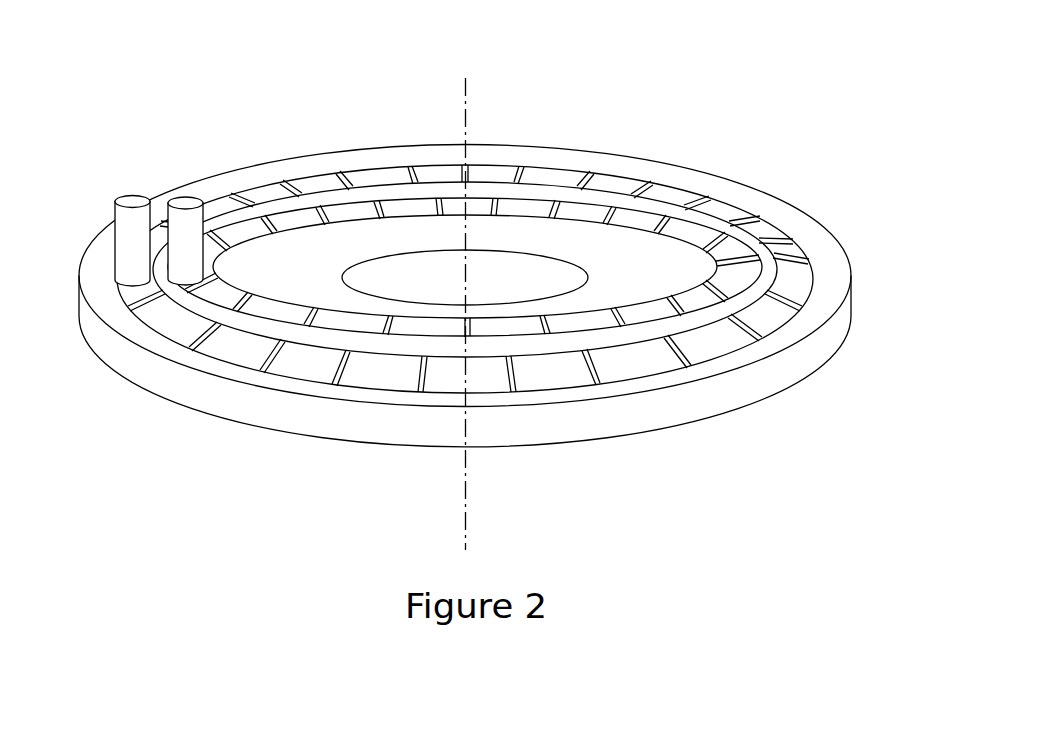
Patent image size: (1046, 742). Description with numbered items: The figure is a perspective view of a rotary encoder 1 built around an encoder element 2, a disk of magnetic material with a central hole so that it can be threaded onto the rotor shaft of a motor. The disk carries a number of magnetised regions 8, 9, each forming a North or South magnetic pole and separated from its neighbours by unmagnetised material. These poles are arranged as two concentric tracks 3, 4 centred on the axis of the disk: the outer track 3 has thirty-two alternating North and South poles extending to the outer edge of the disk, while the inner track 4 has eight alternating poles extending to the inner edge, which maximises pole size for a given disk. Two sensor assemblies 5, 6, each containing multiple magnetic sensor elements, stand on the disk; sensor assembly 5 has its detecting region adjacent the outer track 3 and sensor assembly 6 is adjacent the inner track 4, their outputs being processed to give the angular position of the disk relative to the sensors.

The rotary encoder 1 is at (500, 284).
The encoder element 2 is at (558, 447).
The outer track 3 is at (727, 340).
The inner track 4 is at (720, 250).
The sensor assembly 5 is at (130, 200).
The sensor assembly 6 is at (186, 200).
The magnetised region 8 is at (290, 374).
The magnetised region 9 is at (372, 385).